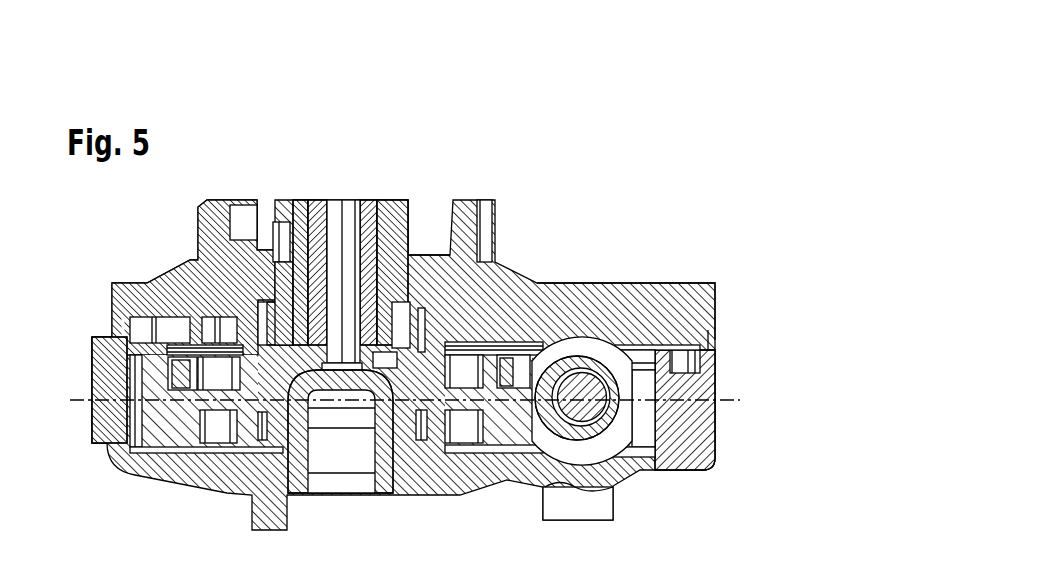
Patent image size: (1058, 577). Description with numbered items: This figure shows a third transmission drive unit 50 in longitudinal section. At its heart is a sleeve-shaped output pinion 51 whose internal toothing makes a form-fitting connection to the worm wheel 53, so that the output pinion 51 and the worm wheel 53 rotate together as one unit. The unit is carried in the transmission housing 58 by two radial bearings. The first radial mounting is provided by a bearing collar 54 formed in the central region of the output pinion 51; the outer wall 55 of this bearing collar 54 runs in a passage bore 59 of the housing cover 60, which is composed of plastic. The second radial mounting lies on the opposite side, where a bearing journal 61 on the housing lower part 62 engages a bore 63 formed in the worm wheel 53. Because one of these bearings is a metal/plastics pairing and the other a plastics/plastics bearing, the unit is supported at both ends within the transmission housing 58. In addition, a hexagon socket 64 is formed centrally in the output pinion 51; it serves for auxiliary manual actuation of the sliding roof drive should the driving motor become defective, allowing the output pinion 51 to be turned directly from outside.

The third transmission drive unit 50 is at (570, 177).
The output pinion 51 is at (396, 194).
The worm wheel 53 is at (180, 405).
The bearing collar 54 is at (278, 282).
The outer wall 55 is at (458, 222).
The transmission housing 58 is at (724, 430).
The passage bore 59 is at (408, 257).
The housing cover 60 is at (672, 295).
The bearing journal 61 is at (300, 440).
The housing lower part 62 is at (681, 465).
The bore 63 is at (298, 405).
The hexagon socket 64 is at (351, 212).